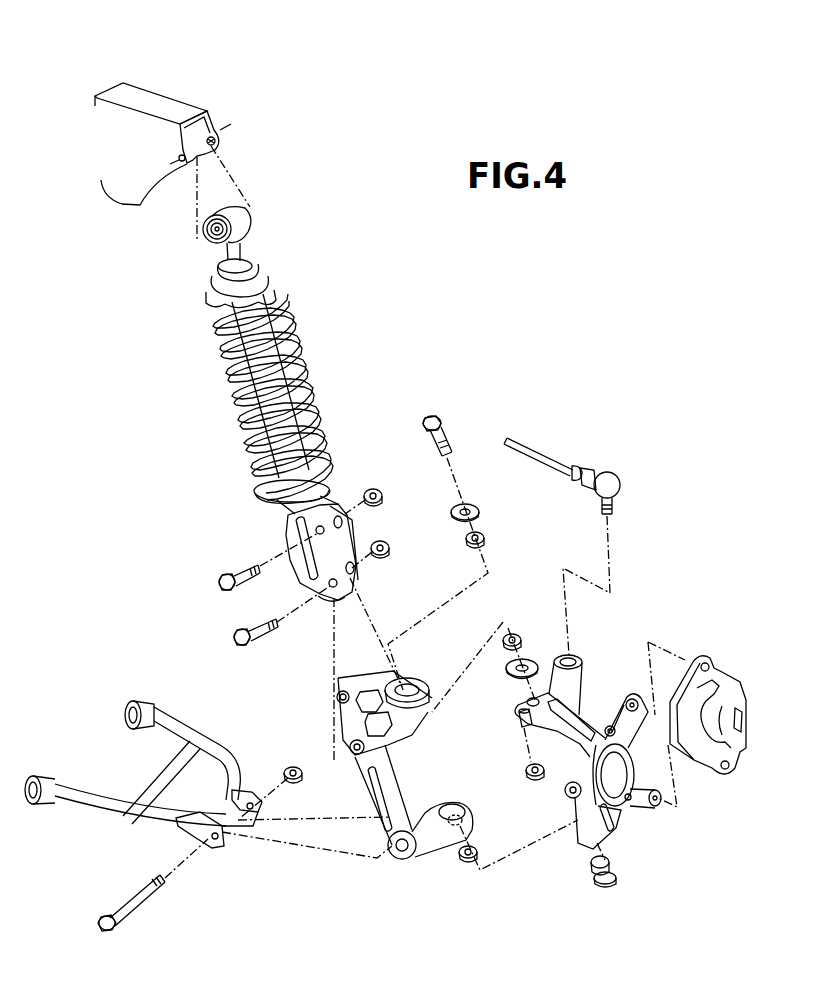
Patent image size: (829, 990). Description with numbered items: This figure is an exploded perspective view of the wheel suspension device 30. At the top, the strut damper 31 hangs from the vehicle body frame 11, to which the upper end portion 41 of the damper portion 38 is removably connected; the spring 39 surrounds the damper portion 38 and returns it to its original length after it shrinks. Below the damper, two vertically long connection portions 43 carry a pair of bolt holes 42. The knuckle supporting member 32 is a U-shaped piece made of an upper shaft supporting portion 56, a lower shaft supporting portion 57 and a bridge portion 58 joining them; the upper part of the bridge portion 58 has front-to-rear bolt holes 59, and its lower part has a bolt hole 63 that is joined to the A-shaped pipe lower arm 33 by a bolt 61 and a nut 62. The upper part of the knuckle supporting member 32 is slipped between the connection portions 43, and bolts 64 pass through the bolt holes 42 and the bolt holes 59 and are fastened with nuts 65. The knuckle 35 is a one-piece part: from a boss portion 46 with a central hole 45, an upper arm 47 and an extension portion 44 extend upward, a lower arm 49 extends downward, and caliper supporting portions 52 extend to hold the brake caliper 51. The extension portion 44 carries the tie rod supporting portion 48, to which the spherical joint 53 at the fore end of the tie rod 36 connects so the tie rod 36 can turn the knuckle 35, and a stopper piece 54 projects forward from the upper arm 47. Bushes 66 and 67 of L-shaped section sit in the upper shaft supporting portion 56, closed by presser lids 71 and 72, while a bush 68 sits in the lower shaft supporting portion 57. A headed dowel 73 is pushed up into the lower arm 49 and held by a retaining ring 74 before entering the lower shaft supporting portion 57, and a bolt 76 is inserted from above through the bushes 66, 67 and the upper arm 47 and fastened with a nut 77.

The vehicle body frame 11 is at (152, 103).
The wheel suspension device 30 is at (447, 312).
The strut damper 31 is at (257, 342).
The knuckle supporting member 32 is at (403, 783).
The lower arm 33 is at (120, 808).
The knuckle 35 is at (582, 769).
The tie rod 36 is at (540, 451).
The damper portion 38 is at (275, 400).
The spring 39 is at (297, 340).
The upper end portion 41 is at (245, 228).
The bolt holes 42 is at (316, 530).
The connection portions 43 is at (327, 584).
The extension portion 44 is at (578, 703).
The central hole 45 is at (620, 772).
The boss portion 46 is at (565, 791).
The upper arm 47 is at (527, 702).
The tie rod supporting portion 48 is at (582, 662).
The lower arm 49 is at (575, 838).
The brake caliper 51 is at (735, 692).
The caliper supporting portions 52 is at (628, 700).
The spherical joint 53 is at (622, 482).
The stopper piece 54 is at (519, 724).
The upper shaft supporting portion 56 is at (418, 686).
The lower shaft supporting portion 57 is at (438, 847).
The bridge portion 58 is at (370, 795).
The bolt holes 59 is at (350, 746).
The bolt 61 is at (142, 904).
The nut 62 is at (290, 766).
The bolt hole 63 is at (393, 847).
The bolts 64 is at (236, 642).
The nuts 65 is at (395, 546).
The bush 66 is at (487, 534).
The bush 67 is at (516, 632).
The bush 68 is at (478, 851).
The presser lid 71 is at (478, 508).
The presser lid 72 is at (528, 660).
The dowel 73 is at (611, 886).
The retaining ring 74 is at (596, 860).
The bolt 76 is at (450, 438).
The nut 77 is at (526, 772).